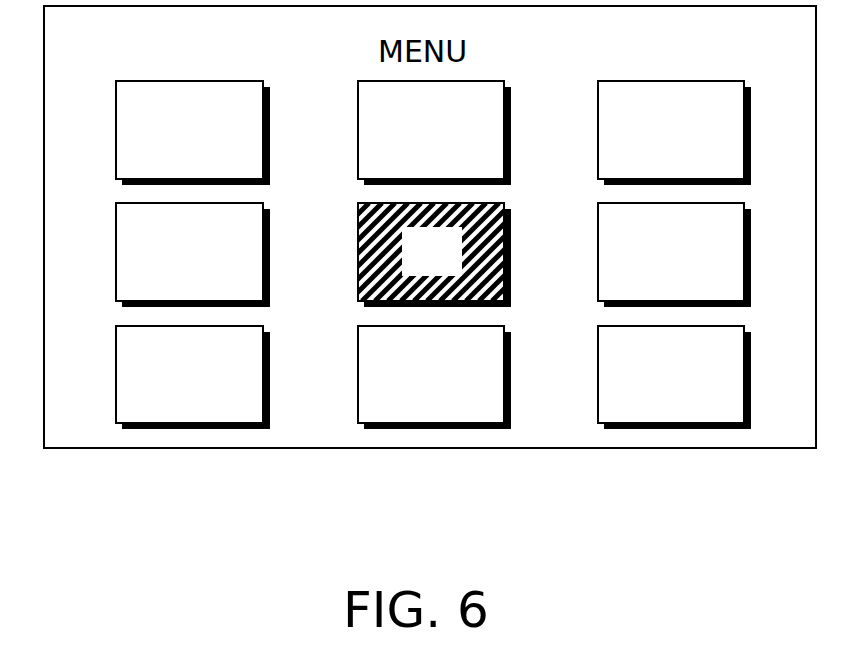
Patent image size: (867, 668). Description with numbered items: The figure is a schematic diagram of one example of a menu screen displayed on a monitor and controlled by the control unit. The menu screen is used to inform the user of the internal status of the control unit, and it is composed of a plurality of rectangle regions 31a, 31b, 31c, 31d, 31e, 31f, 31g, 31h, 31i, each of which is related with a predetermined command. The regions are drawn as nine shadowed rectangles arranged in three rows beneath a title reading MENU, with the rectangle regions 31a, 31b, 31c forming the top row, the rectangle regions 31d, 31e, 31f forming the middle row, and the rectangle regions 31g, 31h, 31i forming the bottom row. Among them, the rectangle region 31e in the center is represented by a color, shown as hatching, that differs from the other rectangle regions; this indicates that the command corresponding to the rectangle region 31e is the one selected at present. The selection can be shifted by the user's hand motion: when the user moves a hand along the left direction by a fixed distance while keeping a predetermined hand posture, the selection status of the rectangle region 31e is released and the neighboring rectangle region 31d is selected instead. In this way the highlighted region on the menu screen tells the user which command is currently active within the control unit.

The rectangle region 31a is at (271, 105).
The rectangle region 31b is at (512, 105).
The rectangle region 31c is at (752, 105).
The rectangle region 31d is at (271, 228).
The rectangle region 31e is at (512, 228).
The rectangle region 31f is at (752, 228).
The rectangle region 31g is at (271, 348).
The rectangle region 31h is at (512, 348).
The rectangle region 31i is at (752, 348).